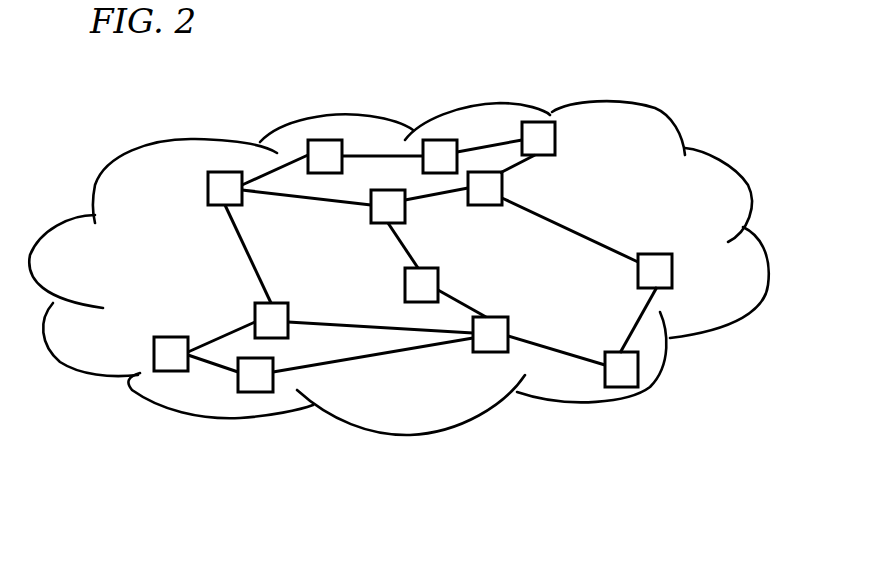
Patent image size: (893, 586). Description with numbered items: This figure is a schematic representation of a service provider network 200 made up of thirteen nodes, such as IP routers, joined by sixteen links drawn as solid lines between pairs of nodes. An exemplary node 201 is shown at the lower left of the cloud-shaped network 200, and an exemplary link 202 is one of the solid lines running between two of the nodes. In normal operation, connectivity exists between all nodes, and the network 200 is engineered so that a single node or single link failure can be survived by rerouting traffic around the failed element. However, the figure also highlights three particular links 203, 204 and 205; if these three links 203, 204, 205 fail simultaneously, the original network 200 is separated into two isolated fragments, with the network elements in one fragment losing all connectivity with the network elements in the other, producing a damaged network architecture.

The network 200 is at (258, 96).
The node 201 is at (171, 337).
The link 202 is at (392, 350).
The link 203 is at (254, 265).
The link 204 is at (412, 253).
The link 205 is at (570, 232).